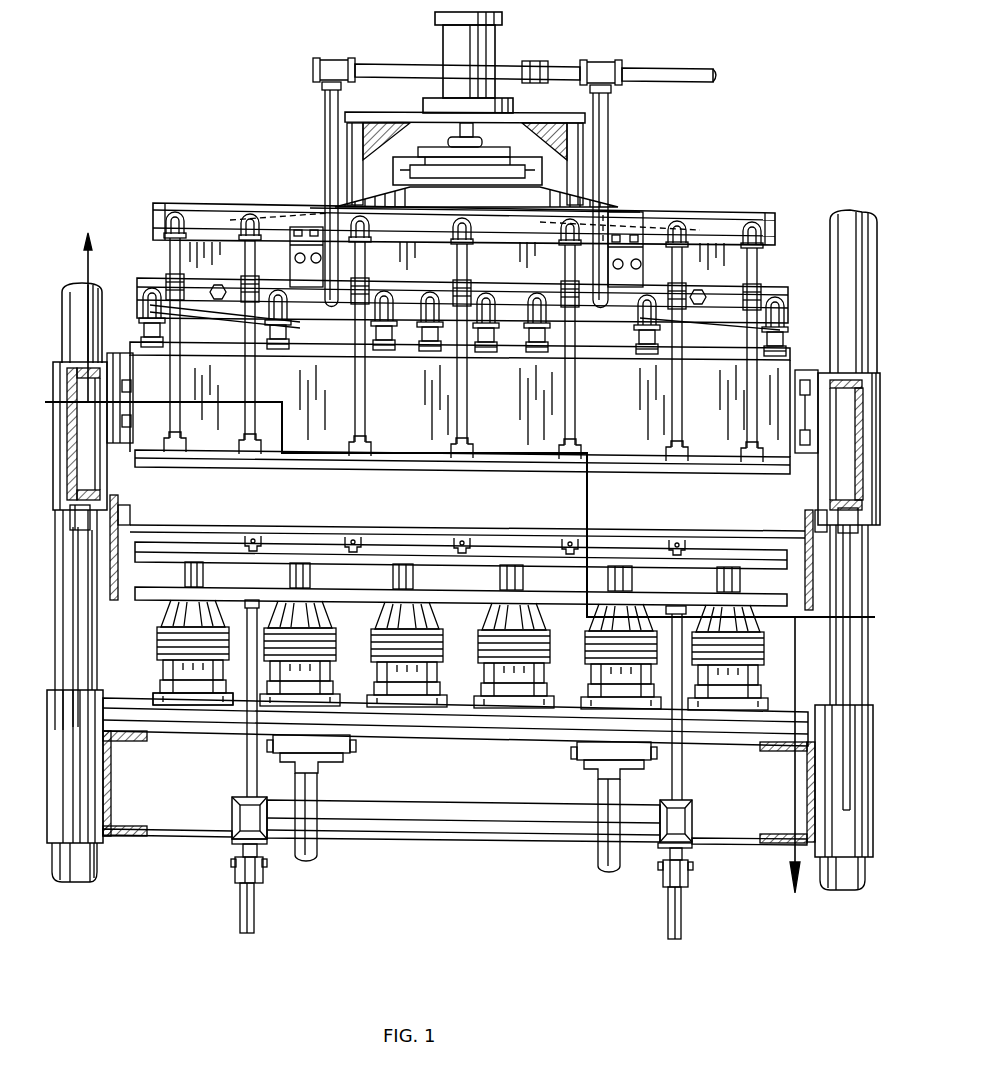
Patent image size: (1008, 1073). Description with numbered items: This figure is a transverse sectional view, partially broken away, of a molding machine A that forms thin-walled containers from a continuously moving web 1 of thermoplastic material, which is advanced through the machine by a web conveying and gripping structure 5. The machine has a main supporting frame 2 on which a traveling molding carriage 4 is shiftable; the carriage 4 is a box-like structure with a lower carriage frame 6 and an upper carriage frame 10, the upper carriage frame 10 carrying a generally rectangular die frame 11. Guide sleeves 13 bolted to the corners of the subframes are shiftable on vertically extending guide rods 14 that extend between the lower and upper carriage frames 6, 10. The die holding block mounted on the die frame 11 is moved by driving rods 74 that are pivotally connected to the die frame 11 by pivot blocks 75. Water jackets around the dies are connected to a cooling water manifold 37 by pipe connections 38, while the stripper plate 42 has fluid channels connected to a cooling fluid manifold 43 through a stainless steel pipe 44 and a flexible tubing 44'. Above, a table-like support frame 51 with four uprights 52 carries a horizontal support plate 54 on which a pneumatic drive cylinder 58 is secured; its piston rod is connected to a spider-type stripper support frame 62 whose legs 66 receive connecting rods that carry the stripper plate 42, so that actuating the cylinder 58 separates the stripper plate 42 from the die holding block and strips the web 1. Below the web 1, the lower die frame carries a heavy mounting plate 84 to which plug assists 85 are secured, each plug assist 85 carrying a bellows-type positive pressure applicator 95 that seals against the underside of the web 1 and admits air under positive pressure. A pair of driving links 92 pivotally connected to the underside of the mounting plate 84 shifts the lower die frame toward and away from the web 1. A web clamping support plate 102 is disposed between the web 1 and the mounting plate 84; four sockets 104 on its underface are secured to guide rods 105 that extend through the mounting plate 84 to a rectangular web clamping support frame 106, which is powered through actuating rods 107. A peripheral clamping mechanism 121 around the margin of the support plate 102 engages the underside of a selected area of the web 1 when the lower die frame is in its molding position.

The pneumatic drive cylinder 58 is at (447, 38).
The support plate 54 is at (553, 118).
The uprights 52 is at (352, 152).
The spider-type legs 66 is at (382, 200).
The table-like support frame 51 is at (582, 146).
The stripper support frame 62 is at (548, 197).
The cooling fluid manifold 43 is at (703, 213).
The flexible tubing 44' is at (775, 316).
The guide rods 14 is at (847, 233).
The cooling water manifold 37 is at (773, 300).
The pipe connections 38 is at (770, 315).
The upper carriage frame 10 is at (803, 370).
The main supporting frame 2 is at (846, 914).
The guide sleeves 13 is at (104, 463).
The web conveying and gripping structure 5 is at (123, 512).
The pivot blocks 75 is at (123, 522).
The stripper plate 42 is at (250, 472).
The stainless steel pipe 44 is at (426, 351).
The die frame 11 is at (622, 435).
The peripheral clamping mechanism 121 is at (643, 563).
The web 1 is at (727, 537).
The driving rods 74 is at (83, 607).
The plug assists 85 is at (434, 631).
The mounting plate 84 is at (230, 700).
The guide rods 105 is at (243, 763).
The molding carriage 4 is at (438, 745).
The positive pressure applicator 95 is at (550, 667).
The driving links 92 is at (318, 852).
The web clamping support frame 106 is at (515, 844).
The molding machine A is at (442, 863).
The actuating rods 107 is at (255, 905).
The lower carriage frame 6 is at (762, 852).
The web clamping support plate 102 is at (333, 553).
The sockets 104 is at (260, 600).